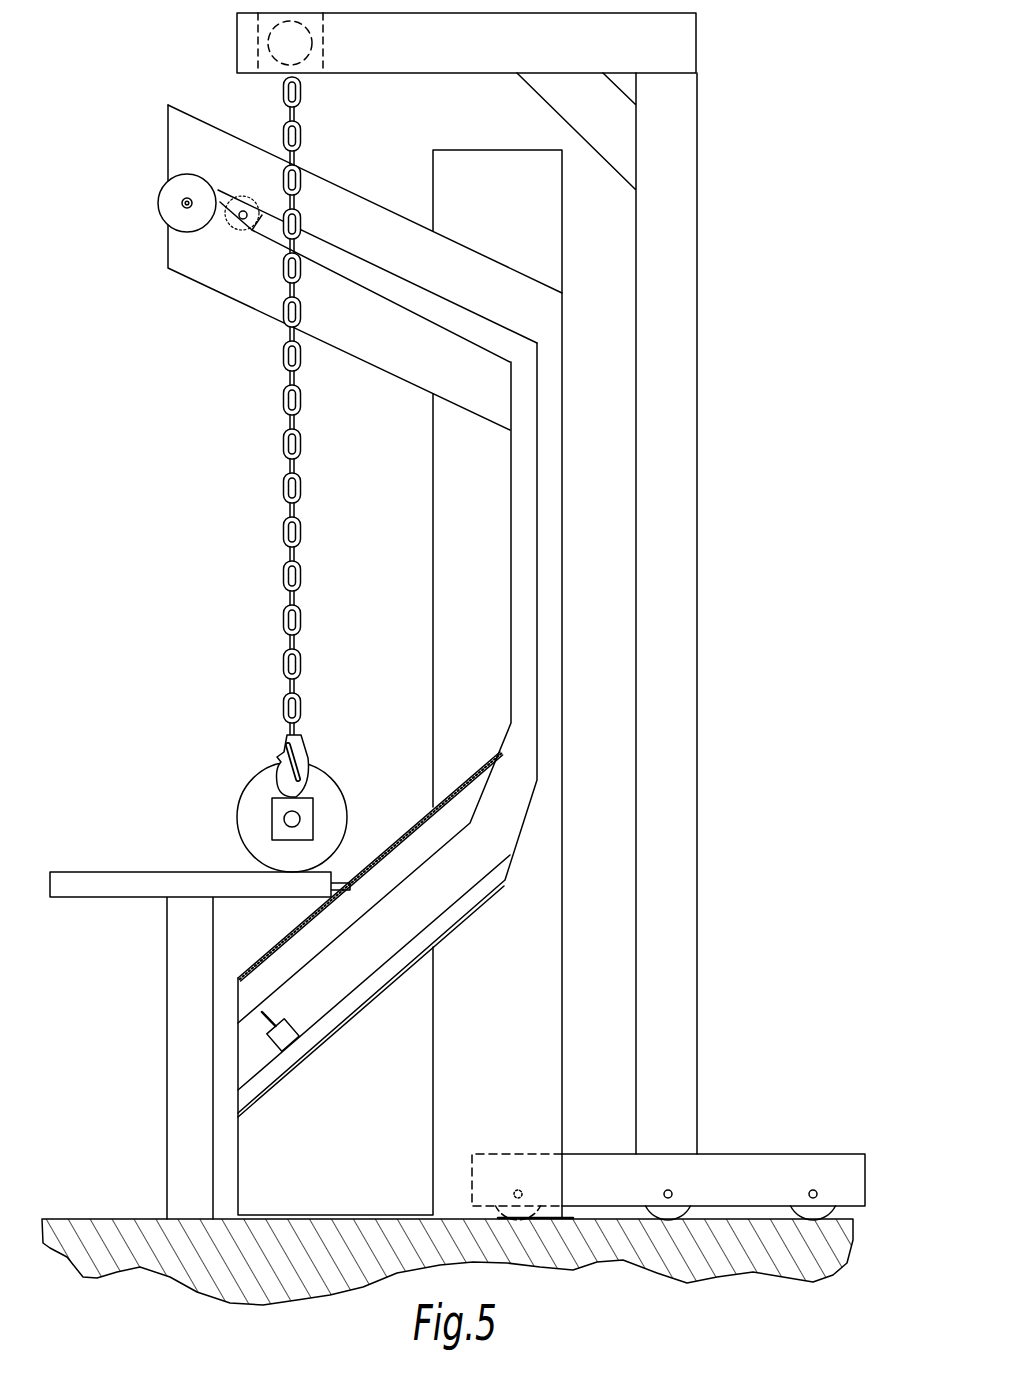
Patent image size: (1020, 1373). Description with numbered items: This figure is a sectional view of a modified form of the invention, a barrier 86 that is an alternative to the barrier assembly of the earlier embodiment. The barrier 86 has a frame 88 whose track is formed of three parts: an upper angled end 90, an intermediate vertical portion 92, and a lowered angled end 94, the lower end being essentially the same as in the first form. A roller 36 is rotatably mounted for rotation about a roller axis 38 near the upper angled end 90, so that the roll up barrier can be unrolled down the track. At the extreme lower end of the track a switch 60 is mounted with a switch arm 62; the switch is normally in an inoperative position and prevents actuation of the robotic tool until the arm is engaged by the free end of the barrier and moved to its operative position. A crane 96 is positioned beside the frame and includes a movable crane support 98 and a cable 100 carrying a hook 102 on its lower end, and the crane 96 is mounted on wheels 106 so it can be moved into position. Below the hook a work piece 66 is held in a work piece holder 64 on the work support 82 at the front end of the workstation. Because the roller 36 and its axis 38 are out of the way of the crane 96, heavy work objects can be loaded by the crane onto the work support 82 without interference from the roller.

The barrier 86 is at (122, 46).
The frame 88 is at (154, 110).
The roller 36 is at (185, 201).
The roller axis 38 is at (165, 209).
The upper angled end 90 is at (338, 255).
The intermediate vertical portion 92 is at (520, 553).
The crane 96 is at (642, 620).
The movable crane support 98 is at (312, 72).
The cable 100 is at (300, 130).
The hook 102 is at (302, 753).
The work piece holder 64 is at (243, 822).
The work piece 66 is at (284, 815).
The work support 82 is at (348, 884).
The lowered angled end 94 is at (373, 968).
The switch 60 is at (292, 1037).
The switch arm 62 is at (264, 1013).
The wheels 106 is at (532, 1208).